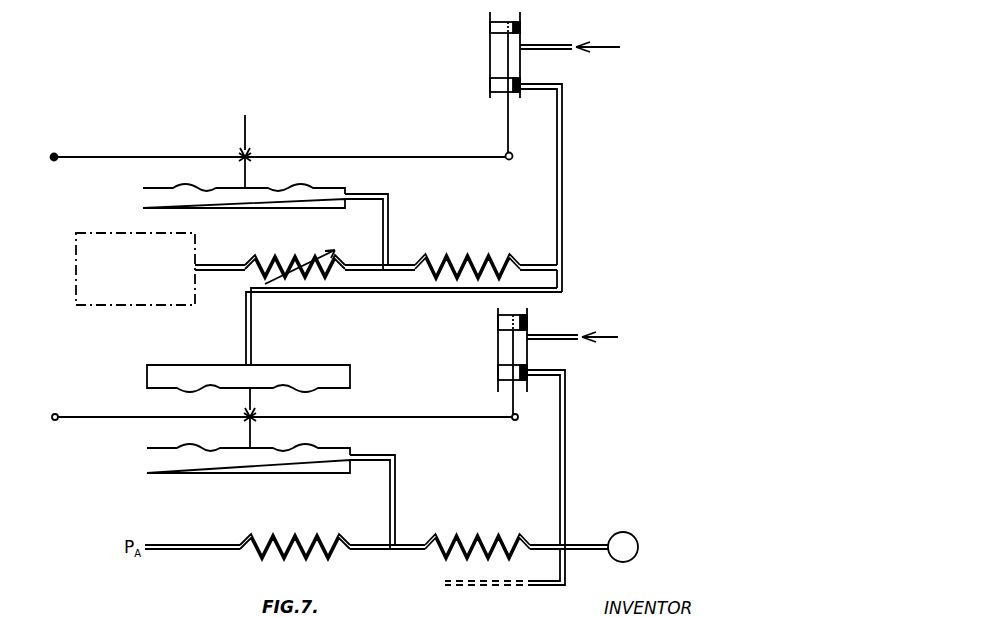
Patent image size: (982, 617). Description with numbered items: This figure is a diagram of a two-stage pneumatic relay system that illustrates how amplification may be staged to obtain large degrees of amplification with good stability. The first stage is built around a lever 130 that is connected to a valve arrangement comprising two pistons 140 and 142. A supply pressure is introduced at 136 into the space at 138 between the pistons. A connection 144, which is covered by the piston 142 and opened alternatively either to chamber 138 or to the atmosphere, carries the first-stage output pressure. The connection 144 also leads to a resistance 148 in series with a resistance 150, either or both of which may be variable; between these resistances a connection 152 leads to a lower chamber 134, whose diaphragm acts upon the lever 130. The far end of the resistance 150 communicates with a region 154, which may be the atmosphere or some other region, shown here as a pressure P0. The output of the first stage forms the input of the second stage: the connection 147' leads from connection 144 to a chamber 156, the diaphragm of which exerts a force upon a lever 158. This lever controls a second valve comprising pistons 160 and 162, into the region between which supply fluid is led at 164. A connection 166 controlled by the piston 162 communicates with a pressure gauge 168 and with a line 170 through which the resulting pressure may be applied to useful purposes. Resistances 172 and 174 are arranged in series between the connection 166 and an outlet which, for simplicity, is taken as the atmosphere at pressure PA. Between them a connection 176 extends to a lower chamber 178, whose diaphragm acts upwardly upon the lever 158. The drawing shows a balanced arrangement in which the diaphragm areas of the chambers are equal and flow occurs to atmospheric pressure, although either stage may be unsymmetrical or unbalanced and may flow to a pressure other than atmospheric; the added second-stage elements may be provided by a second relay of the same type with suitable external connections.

The lever 130 is at (347, 156).
The lower chamber 134 is at (343, 192).
The supply pressure inlet 136 is at (538, 36).
The space between pistons 138 is at (490, 50).
The piston 140 is at (490, 25).
The piston 142 is at (490, 87).
The connection 144 is at (563, 144).
The connection 147' is at (404, 326).
The resistance 148 is at (502, 250).
The resistance 150 is at (330, 262).
The connection 152 is at (389, 228).
The region 154 is at (76, 268).
The chamber 156 is at (296, 372).
The lever 158 is at (356, 417).
The piston 160 is at (498, 324).
The piston 162 is at (498, 374).
The supply fluid inlet 164 is at (556, 342).
The connection 166 is at (567, 445).
The pressure gauge 168 is at (632, 534).
The line 170 is at (566, 574).
The resistance 172 is at (500, 536).
The resistance 174 is at (307, 536).
The connection 176 is at (396, 487).
The lower chamber 178 is at (340, 456).